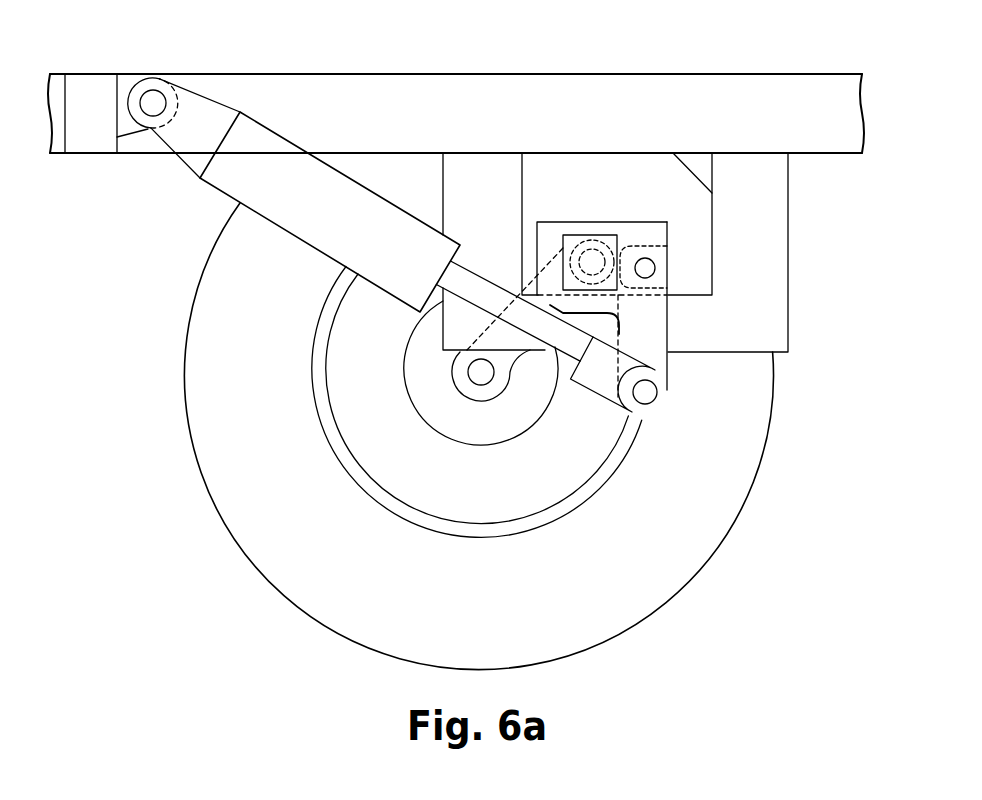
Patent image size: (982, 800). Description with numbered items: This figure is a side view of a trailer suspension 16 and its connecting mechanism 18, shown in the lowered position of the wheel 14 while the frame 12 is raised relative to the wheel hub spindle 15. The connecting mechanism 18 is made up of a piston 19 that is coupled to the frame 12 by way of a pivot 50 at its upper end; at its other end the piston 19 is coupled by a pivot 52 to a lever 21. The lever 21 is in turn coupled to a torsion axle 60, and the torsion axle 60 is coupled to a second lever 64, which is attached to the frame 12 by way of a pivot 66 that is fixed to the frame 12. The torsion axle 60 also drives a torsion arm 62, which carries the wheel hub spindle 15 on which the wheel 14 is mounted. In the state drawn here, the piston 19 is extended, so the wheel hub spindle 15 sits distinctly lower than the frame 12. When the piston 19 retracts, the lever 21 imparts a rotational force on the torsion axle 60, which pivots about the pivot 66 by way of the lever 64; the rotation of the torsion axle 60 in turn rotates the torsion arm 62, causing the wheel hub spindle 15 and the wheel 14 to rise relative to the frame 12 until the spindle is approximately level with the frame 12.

The frame 12 is at (710, 102).
The wheel 14 is at (240, 502).
The wheel hub spindle 15 is at (480, 372).
The trailer suspension 16 is at (640, 231).
The connecting mechanism 18 is at (192, 147).
The piston 19 is at (272, 207).
The lever 21 is at (655, 322).
The pivot 50 is at (155, 100).
The pivot 52 is at (647, 397).
The torsion axle 60 is at (592, 258).
The torsion arm 62 is at (668, 352).
The lever 64 is at (552, 242).
The pivot 66 is at (655, 268).